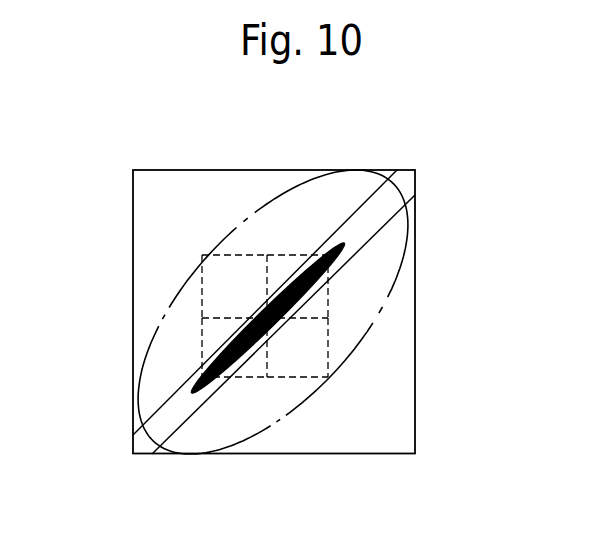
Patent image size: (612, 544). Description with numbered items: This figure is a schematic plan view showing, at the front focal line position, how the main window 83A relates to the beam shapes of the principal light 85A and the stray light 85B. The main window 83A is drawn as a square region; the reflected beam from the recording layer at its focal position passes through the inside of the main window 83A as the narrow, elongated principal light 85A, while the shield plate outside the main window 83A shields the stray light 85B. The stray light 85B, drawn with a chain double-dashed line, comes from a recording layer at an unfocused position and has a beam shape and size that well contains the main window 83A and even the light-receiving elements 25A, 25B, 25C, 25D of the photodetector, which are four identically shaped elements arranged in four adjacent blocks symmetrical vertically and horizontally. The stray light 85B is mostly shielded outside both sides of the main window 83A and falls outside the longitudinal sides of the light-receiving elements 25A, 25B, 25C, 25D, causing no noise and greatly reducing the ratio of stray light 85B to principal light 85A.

The main window 83A is at (407, 182).
The principal light 85A is at (343, 245).
The stray light 85B is at (365, 340).
The light-receiving element 25A is at (217, 288).
The light-receiving element 25B is at (323, 299).
The light-receiving element 25C is at (318, 363).
The light-receiving element 25D is at (215, 342).